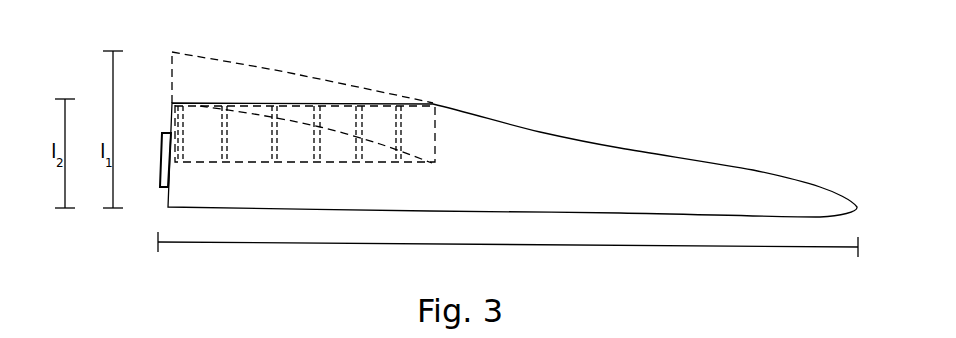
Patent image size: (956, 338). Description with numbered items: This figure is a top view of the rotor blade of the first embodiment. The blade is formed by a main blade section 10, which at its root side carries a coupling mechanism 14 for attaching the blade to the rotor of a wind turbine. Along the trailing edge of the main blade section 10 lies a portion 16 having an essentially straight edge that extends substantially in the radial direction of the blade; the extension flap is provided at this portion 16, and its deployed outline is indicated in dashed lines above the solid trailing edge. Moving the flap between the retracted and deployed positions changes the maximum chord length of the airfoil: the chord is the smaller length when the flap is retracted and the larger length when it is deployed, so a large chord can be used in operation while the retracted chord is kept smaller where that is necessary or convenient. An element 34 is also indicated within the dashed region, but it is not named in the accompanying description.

The main blade section 10 is at (637, 167).
The coupling mechanism 14 is at (158, 132).
The portion of the main blade section 16 is at (300, 76).
The internal structure (dashed) 34 is at (402, 127).